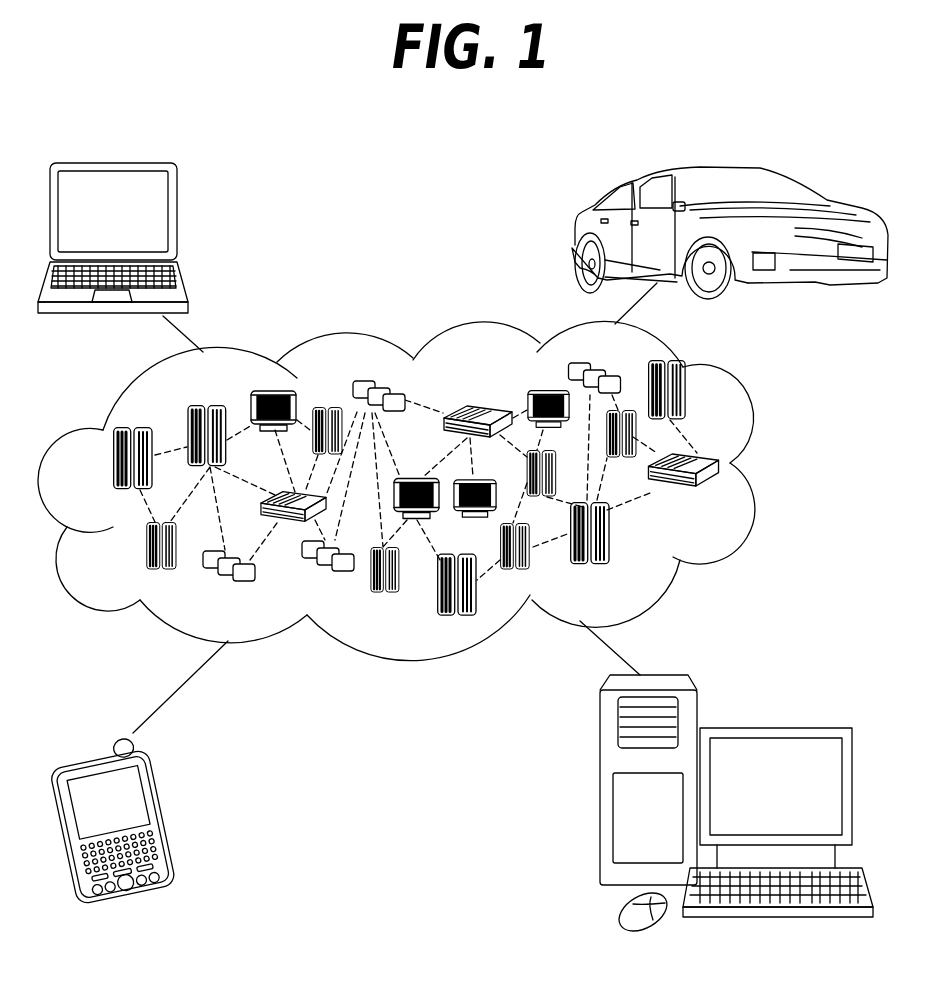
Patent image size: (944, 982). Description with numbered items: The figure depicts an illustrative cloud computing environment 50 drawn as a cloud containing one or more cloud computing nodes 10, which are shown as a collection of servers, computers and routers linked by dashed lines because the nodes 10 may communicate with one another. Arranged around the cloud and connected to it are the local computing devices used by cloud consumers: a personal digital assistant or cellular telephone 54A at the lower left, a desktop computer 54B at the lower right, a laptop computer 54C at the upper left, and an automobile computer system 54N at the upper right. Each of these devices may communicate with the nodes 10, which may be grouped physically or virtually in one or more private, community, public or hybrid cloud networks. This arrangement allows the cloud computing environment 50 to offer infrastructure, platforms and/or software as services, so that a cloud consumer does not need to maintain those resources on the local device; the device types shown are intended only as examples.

The cloud computing nodes 10 is at (728, 498).
The cloud computing environment 50 is at (770, 467).
The personal digital assistant (PDA) or cellular telephone 54A is at (163, 814).
The desktop computer 54B is at (773, 728).
The laptop computer 54C is at (177, 216).
The automobile computer system 54N is at (574, 233).